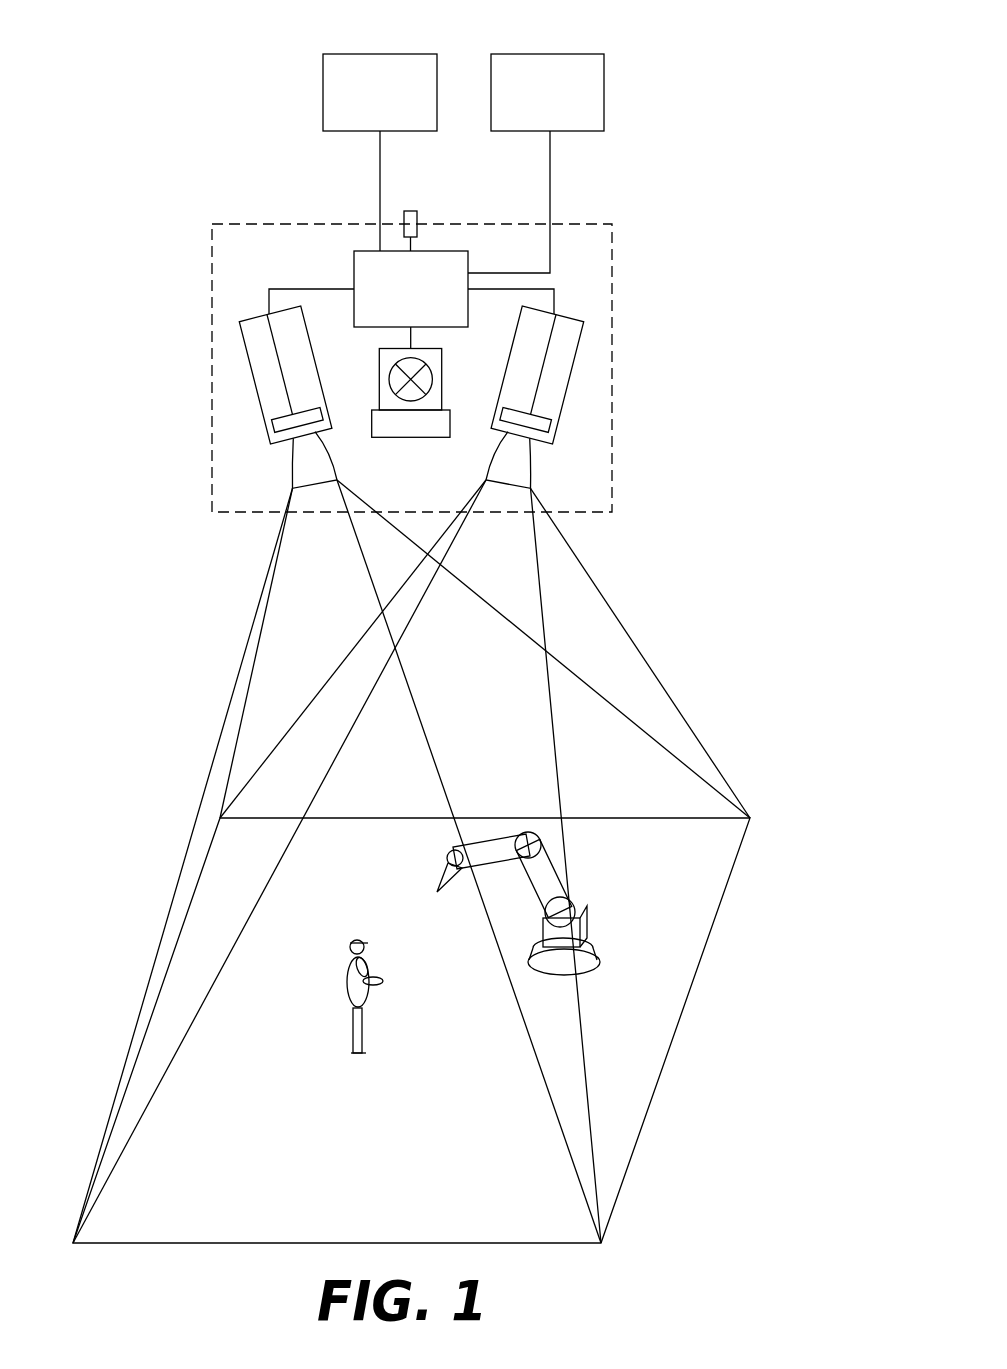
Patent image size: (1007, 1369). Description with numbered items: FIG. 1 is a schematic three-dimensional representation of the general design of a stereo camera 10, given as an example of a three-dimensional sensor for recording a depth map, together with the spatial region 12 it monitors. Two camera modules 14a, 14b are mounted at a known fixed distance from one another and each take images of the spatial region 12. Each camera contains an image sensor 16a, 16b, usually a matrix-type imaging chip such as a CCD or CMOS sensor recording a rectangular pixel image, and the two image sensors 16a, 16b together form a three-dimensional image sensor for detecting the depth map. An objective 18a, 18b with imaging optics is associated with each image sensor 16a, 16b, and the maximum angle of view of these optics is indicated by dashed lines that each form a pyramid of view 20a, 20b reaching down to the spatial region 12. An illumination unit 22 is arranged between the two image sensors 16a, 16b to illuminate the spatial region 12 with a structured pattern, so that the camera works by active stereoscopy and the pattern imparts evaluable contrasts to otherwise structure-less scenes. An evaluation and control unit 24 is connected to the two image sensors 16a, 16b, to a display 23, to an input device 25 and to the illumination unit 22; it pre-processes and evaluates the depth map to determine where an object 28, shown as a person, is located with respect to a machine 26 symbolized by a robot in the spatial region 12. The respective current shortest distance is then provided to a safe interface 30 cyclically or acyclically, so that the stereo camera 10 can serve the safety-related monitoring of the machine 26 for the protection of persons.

The stereo camera 10 is at (612, 242).
The spatial region 12 is at (717, 670).
The camera module 14a is at (260, 380).
The camera module 14b is at (577, 350).
The image sensor 16a is at (267, 437).
The image sensor 16b is at (557, 423).
The objective 18a is at (297, 470).
The objective 18b is at (530, 488).
The pyramid of view 20a is at (240, 678).
The pyramid of view 20b is at (635, 655).
The illumination unit 22 is at (465, 400).
The display 23 is at (348, 54).
The evaluation and control unit 24 is at (367, 260).
The input device 25 is at (585, 54).
The machine 26 is at (587, 963).
The object 28 is at (352, 1040).
The safe interface 30 is at (417, 220).